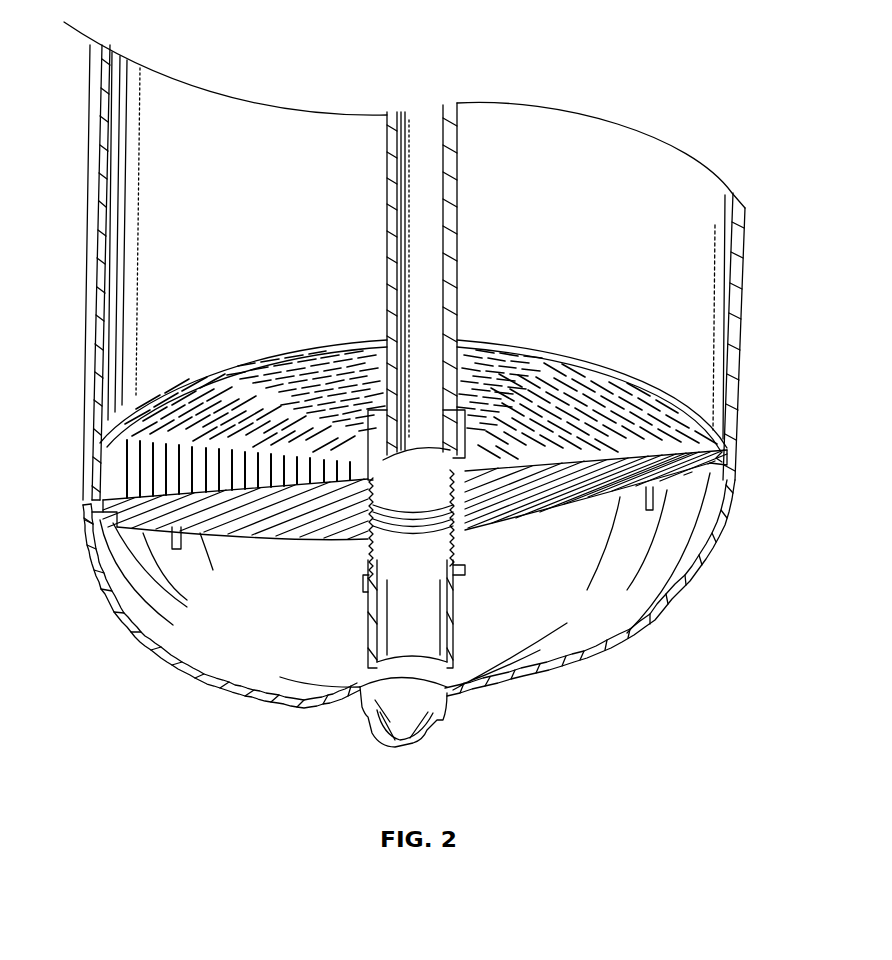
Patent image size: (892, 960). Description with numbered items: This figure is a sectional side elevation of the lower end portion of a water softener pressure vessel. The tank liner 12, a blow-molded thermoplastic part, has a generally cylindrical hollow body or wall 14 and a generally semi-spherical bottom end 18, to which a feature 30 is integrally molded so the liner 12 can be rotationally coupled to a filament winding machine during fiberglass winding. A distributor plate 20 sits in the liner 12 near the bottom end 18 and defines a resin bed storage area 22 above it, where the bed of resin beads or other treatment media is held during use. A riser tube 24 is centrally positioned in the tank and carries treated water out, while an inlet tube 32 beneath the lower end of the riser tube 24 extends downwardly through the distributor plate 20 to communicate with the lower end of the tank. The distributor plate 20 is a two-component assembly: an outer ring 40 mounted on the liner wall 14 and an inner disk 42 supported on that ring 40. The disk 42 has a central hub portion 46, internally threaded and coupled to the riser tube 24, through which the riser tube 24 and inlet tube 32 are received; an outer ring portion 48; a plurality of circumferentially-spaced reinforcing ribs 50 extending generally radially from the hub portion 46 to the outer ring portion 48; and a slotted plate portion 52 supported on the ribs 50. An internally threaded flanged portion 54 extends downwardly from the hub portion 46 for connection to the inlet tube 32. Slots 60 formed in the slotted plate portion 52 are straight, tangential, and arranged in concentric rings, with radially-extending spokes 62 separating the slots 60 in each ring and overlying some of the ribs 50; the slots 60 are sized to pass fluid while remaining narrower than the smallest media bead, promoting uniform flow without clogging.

The tank liner 12 is at (762, 215).
The wall 14 is at (742, 288).
The bottom end 18 is at (630, 633).
The distributor plate 20 is at (668, 386).
The resin bed storage area 22 is at (554, 216).
The riser tube 24 is at (387, 233).
The feature 30 is at (468, 717).
The inlet tube 32 is at (368, 625).
The outer ring 40 is at (70, 508).
The inner disk 42 is at (676, 440).
The central hub portion 46 is at (463, 520).
The outer ring portion 48 is at (112, 456).
The reinforcing ribs 50 is at (533, 493).
The slotted plate portion 52 is at (187, 390).
The internally threaded flanged portion 54 is at (368, 547).
The slots 60 is at (583, 387).
The radially-extending spokes 62 is at (220, 390).